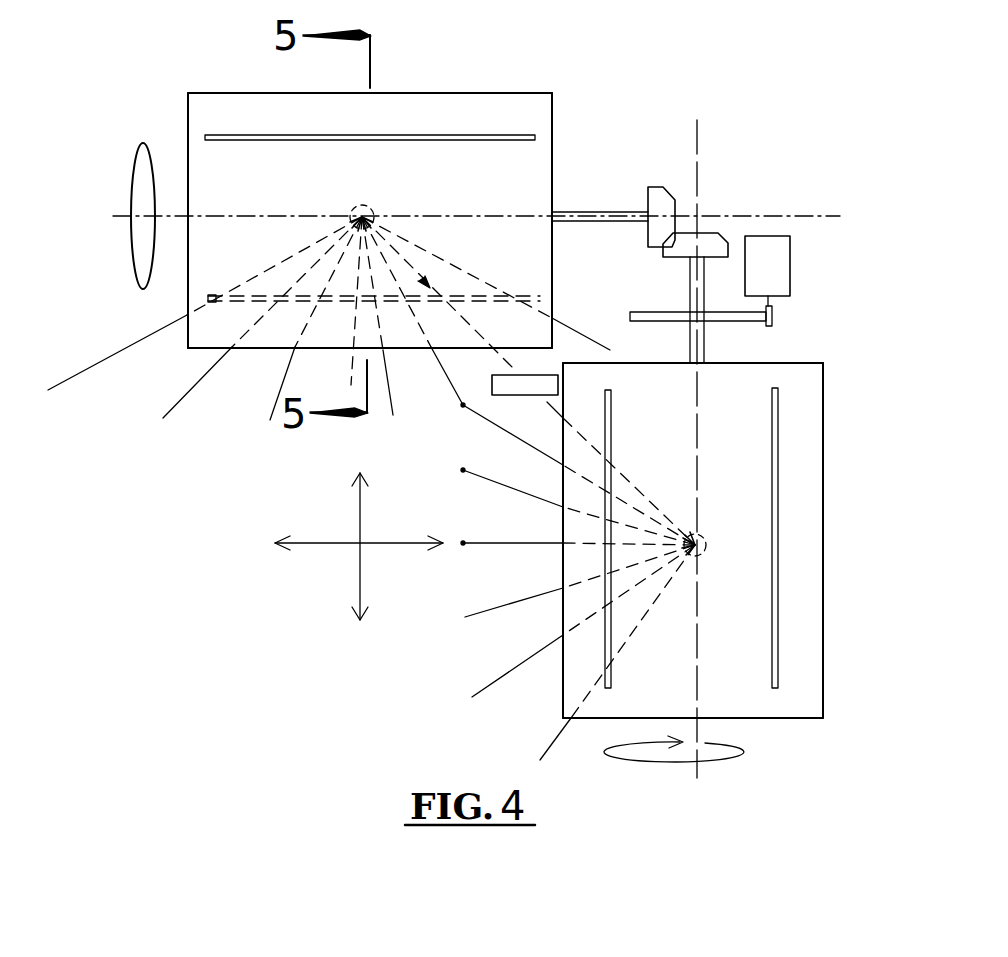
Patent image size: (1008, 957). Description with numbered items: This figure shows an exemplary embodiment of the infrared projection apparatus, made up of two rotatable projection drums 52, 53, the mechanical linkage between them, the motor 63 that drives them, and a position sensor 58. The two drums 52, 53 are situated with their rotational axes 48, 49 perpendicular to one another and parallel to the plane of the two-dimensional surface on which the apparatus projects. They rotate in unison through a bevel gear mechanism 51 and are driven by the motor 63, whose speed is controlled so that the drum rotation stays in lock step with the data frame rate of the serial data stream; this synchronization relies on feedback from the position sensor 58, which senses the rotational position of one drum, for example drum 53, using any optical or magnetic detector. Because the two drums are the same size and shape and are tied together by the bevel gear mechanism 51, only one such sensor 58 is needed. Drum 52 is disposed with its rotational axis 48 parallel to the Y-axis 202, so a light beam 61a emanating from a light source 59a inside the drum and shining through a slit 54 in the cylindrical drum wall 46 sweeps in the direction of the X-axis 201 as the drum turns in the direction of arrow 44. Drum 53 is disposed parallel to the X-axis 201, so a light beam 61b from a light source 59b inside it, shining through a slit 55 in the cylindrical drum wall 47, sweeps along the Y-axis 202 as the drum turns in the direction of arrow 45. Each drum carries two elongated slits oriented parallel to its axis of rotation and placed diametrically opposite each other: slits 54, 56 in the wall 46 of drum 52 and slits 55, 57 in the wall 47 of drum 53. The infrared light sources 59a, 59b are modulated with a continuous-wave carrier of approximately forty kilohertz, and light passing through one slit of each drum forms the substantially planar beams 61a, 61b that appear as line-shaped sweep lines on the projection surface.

The arrow 44 is at (130, 243).
The arrow 45 is at (655, 762).
The cylindrical drum wall 46 is at (443, 98).
The cylindrical drum wall 47 is at (810, 570).
The rotational axis 48 is at (120, 215).
The rotational axis 49 is at (700, 770).
The bevel gear mechanism 51 is at (675, 312).
The rotatable drum 52 is at (220, 88).
The rotatable drum 53 is at (828, 440).
The slit 54 is at (515, 300).
The slit 55 is at (620, 405).
The slit 56 is at (500, 138).
The slit 57 is at (780, 405).
The position sensor 58 is at (535, 396).
The light source 59a is at (375, 210).
The light source 59b is at (698, 543).
The light beam 61a is at (185, 397).
The light beam 61b is at (500, 607).
The motor 63 is at (790, 291).
The X-axis 201 is at (357, 514).
The Y-axis 202 is at (383, 546).